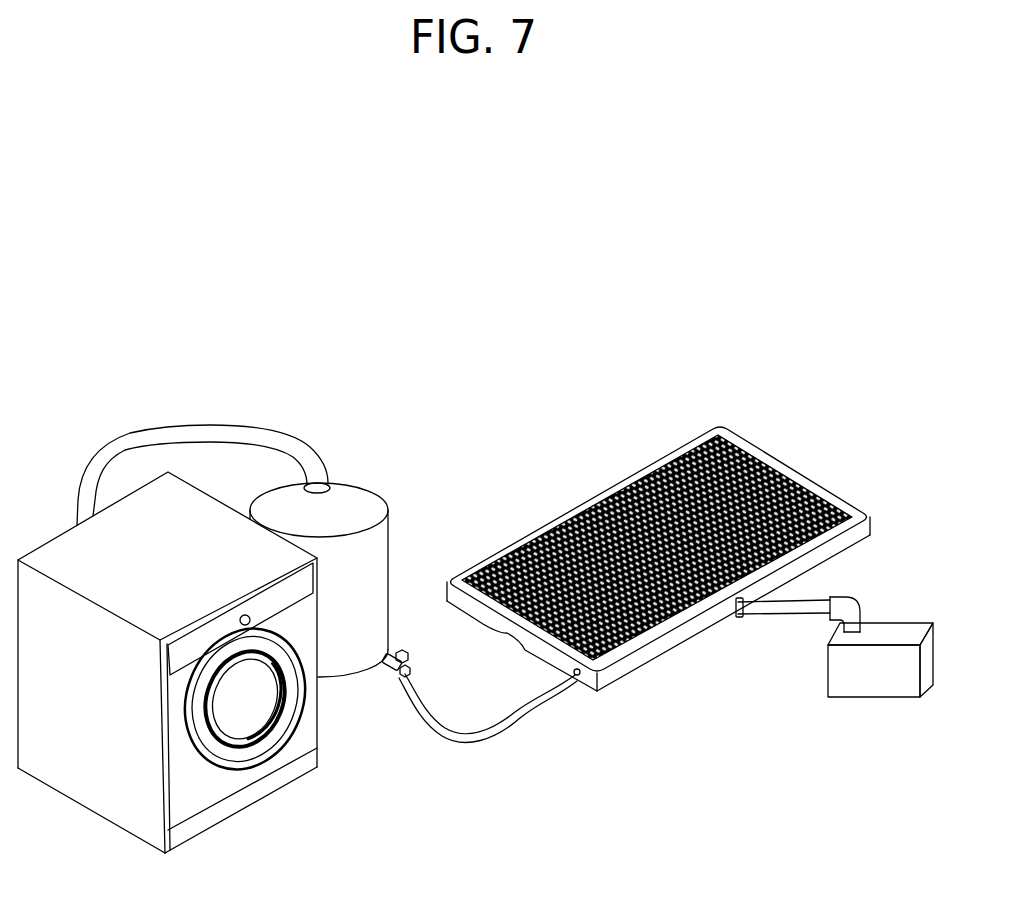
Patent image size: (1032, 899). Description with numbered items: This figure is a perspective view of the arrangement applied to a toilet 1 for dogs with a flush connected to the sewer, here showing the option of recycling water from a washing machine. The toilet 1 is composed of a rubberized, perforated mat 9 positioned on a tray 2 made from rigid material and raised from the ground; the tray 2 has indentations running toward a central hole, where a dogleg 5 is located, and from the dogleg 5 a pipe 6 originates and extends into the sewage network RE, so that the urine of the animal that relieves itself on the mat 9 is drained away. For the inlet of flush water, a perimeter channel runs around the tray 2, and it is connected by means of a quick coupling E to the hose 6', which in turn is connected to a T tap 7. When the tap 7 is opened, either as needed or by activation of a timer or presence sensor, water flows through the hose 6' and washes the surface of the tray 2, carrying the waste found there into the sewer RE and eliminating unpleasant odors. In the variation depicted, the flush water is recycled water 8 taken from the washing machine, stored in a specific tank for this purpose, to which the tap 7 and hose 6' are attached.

The toilet 1 is at (592, 421).
The tray 2 is at (853, 500).
The mat 9 is at (673, 467).
The recycled water 8 is at (363, 497).
The tap 7 is at (390, 666).
The hose 6' is at (488, 744).
The pipe 6 is at (783, 648).
The dogleg 5 is at (856, 608).
The quick coupling E is at (575, 680).
The sewage network RE is at (883, 692).